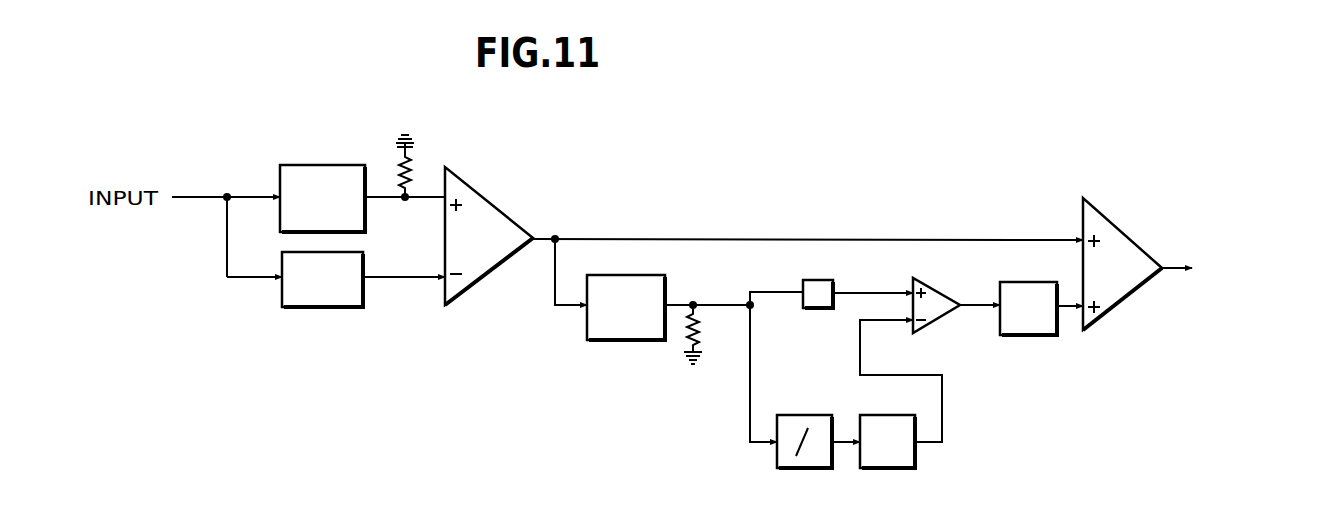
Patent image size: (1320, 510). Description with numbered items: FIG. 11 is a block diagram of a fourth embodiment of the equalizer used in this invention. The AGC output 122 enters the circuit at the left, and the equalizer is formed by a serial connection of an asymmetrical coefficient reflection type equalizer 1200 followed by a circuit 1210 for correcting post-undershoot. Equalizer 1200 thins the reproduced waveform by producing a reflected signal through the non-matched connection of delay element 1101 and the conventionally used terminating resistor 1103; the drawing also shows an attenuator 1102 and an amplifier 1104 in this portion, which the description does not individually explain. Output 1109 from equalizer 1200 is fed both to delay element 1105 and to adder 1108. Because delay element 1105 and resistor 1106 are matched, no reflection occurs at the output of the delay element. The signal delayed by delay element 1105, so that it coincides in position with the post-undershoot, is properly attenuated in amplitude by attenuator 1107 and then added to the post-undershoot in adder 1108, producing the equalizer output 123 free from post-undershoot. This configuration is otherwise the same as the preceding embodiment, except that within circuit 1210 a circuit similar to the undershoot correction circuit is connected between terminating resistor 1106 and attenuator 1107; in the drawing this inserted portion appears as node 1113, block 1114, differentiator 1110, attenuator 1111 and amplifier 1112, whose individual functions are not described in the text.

The AGC output 122 is at (196, 196).
The delay element 1101 is at (320, 165).
The attenuator 1102 is at (325, 307).
The terminating resistor 1103 is at (418, 148).
The differential amplifier 1104 is at (488, 204).
The output from equalizer 1200 1109 is at (556, 236).
The delay element 1105 is at (600, 340).
The terminating resistor 1106 is at (686, 350).
The node 1113 is at (757, 292).
The block 1114 is at (810, 308).
The differentiator 1110 is at (798, 415).
The attenuator 1111 is at (876, 415).
The differential amplifier 1112 is at (926, 288).
The attenuator 1107 is at (1030, 335).
The adder 1108 is at (1136, 240).
The equalizer output 123 is at (1166, 272).
The asymmetrical coefficient reflection type equalizer 1200 is at (517, 357).
The circuit for correcting post-undershoot 1210 is at (1175, 186).